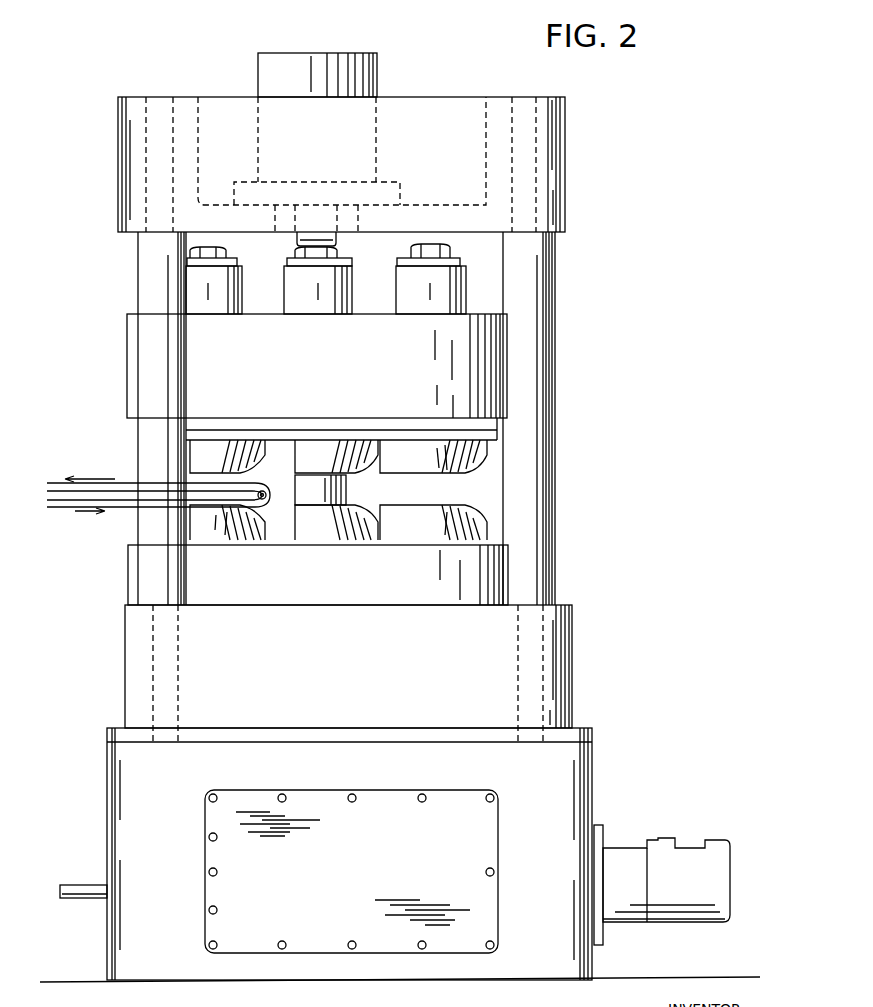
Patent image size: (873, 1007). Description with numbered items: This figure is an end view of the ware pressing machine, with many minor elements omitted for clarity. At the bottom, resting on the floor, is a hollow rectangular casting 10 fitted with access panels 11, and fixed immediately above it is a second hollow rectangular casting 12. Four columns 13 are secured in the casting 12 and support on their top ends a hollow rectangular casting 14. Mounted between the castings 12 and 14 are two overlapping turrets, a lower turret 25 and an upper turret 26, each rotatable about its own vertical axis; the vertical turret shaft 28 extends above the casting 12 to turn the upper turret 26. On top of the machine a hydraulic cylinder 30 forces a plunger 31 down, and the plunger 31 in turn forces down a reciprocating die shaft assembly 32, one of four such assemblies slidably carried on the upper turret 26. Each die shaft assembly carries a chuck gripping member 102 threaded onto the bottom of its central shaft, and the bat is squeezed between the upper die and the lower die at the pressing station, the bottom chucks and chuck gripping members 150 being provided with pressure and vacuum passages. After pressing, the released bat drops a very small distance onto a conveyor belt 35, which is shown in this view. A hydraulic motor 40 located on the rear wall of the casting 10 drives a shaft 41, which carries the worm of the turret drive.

The hollow rectangular casting 10 is at (107, 790).
The access panels 11 is at (402, 795).
The hollow rectangular casting 12 is at (125, 666).
The columns 13 is at (138, 269).
The hollow rectangular casting 14 is at (565, 134).
The lower turret 25 is at (128, 577).
The upper turret 26 is at (470, 312).
The vertical turret shaft 28 is at (347, 488).
The hydraulic cylinder 30 is at (378, 62).
The plunger 31 is at (337, 239).
The die shaft assembly 32 is at (340, 255).
The conveyor belt 35 is at (118, 510).
The hydraulic motor 40 is at (663, 840).
The shaft 41 is at (92, 885).
The chuck gripping member 102 is at (437, 470).
The bottom chucks and chuck gripping members 150 is at (485, 508).